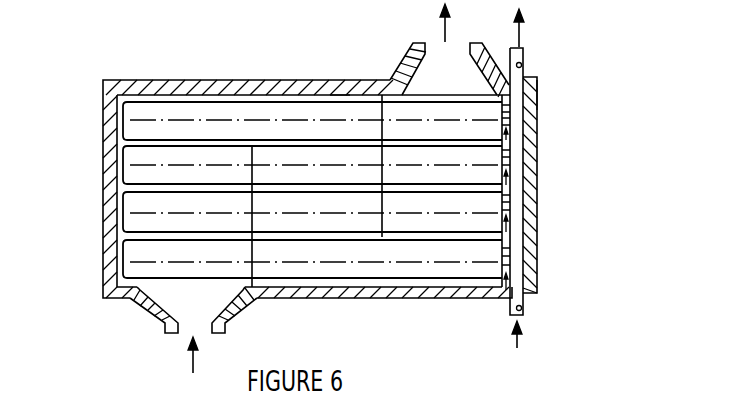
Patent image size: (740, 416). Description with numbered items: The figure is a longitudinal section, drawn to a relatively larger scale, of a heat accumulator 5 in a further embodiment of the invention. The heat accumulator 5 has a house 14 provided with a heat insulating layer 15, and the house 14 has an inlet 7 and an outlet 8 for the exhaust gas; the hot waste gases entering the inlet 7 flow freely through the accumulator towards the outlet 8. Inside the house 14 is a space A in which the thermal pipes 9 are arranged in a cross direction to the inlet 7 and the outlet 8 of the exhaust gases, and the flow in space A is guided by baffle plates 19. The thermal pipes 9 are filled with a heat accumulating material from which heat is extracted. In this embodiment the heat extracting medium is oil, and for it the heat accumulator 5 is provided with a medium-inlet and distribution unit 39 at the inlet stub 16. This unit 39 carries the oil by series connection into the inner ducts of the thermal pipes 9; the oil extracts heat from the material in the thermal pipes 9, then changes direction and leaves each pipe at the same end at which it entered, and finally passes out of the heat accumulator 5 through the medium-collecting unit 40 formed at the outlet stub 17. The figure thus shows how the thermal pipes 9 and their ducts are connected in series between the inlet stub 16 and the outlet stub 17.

The heat accumulator 5 is at (92, 71).
The inlet 7 is at (180, 328).
The outlet 8 is at (436, 42).
The thermal pipes 9 is at (163, 262).
The house 14 is at (331, 85).
The heat insulating layer 15 is at (263, 87).
The inlet stub 16 is at (522, 309).
The outlet stub 17 is at (522, 63).
The baffle plates 19 is at (253, 250).
The medium-inlet and distribution unit 39 is at (535, 218).
The medium-collecting unit 40 is at (542, 88).
The space A is at (340, 96).